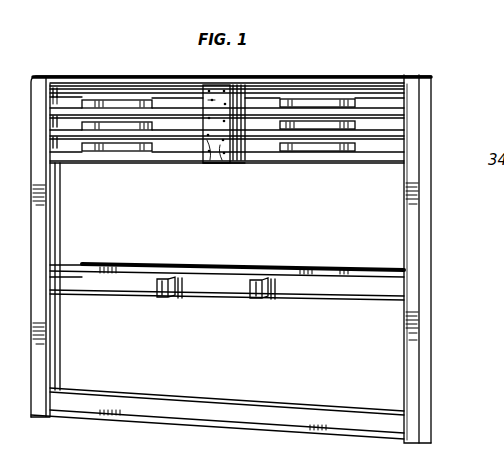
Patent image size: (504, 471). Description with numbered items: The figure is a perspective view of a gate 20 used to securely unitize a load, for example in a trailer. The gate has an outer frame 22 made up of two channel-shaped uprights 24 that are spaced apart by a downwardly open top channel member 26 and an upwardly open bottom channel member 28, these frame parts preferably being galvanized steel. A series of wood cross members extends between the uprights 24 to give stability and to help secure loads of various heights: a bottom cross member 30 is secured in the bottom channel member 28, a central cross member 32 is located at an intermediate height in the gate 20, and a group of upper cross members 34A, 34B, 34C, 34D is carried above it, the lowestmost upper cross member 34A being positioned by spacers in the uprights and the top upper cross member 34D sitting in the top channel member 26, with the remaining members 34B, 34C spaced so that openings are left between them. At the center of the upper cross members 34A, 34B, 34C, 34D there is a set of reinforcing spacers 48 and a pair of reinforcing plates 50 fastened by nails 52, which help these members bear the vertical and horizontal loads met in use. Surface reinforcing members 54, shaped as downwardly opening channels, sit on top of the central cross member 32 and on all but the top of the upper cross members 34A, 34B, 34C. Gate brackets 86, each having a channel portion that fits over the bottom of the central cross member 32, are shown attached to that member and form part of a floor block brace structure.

The gate 20 is at (436, 60).
The outer frame 22 is at (418, 213).
The channel-shaped uprights 24 is at (40, 228).
The top channel member 26 is at (140, 77).
The bottom channel member 28 is at (127, 430).
The bottom cross member 30 is at (197, 410).
The central cross member 32 is at (298, 296).
The lowestmost upper cross member 34A is at (165, 162).
The upper cross member 34B is at (390, 133).
The upper cross member 34C is at (395, 105).
The top upper cross member 34D is at (357, 82).
The reinforcing spacers 48 is at (245, 96).
The reinforcing plates 50 is at (233, 164).
The nails 52 is at (205, 165).
The surface reinforcing members 54 is at (325, 122).
The gate bracket 86 is at (240, 300).